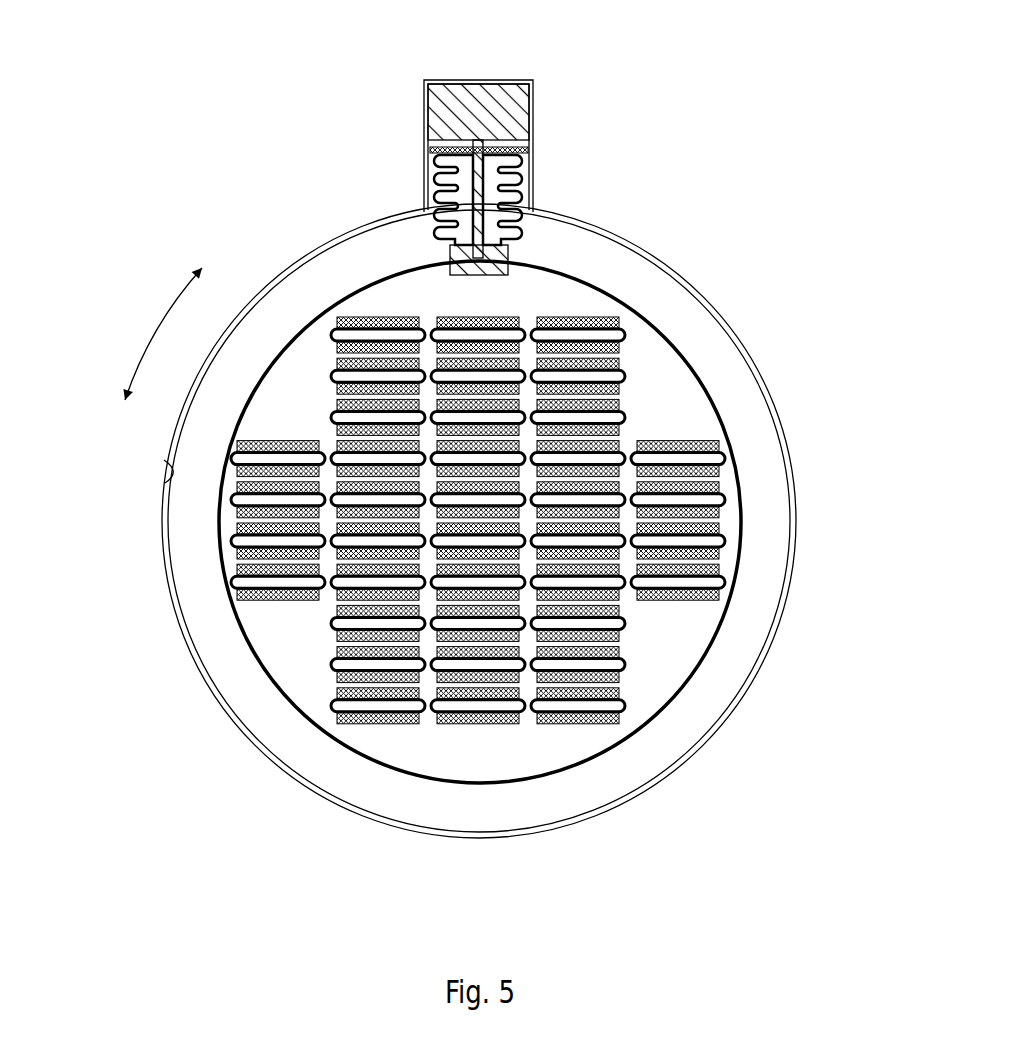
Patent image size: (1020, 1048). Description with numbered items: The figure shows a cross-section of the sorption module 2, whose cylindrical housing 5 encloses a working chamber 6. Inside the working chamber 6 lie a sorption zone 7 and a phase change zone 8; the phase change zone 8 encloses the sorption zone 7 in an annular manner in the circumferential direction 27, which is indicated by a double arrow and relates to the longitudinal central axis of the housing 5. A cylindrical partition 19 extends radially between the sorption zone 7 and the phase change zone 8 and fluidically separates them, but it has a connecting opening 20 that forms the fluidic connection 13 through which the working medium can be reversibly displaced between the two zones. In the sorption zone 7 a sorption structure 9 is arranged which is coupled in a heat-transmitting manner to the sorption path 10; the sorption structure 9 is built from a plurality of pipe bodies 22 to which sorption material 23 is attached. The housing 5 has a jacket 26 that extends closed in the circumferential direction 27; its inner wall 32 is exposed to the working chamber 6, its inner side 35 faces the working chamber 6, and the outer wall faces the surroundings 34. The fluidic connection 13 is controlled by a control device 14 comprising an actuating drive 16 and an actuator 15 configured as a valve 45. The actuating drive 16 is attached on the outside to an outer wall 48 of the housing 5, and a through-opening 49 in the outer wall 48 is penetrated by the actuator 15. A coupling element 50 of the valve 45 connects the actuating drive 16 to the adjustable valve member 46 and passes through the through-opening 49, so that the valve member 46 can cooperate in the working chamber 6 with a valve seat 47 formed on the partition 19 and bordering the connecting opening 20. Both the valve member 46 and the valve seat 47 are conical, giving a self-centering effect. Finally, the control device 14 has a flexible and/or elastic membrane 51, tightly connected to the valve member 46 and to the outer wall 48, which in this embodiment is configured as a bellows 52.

The sorption module 2 is at (818, 237).
The housing 5 is at (752, 357).
The working chamber 6 is at (306, 412).
The sorption zone 7 is at (657, 367).
The phase change zone 8 is at (753, 415).
The sorption structure 9 is at (630, 327).
The sorption path 10 is at (335, 663).
The fluidic connection 13 is at (490, 277).
The control device 14 is at (578, 110).
The actuator 15 is at (432, 162).
The actuating drive 16 is at (480, 95).
The partition 19 is at (741, 475).
The connecting opening 20 is at (490, 277).
The pipe bodies 22 is at (625, 413).
The sorption material 23 is at (618, 648).
The jacket 26 is at (157, 520).
The circumferential direction 27 is at (150, 330).
The inner wall 32 is at (168, 452).
The surroundings 34 is at (236, 223).
The inner side 35 is at (170, 470).
The valve 45 is at (432, 162).
The valve member 46 is at (495, 253).
The valve seat 47 is at (485, 273).
The outer wall 48 is at (353, 232).
The through-opening 49 is at (523, 213).
The coupling element 50 is at (480, 218).
The membrane 51 is at (523, 178).
The bellows 52 is at (523, 178).